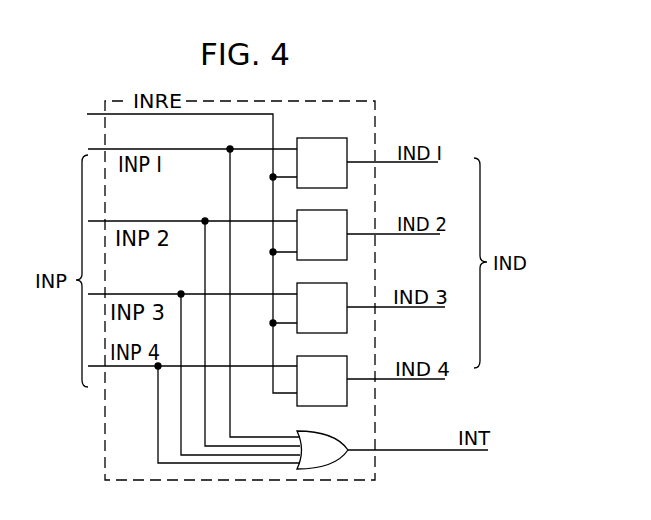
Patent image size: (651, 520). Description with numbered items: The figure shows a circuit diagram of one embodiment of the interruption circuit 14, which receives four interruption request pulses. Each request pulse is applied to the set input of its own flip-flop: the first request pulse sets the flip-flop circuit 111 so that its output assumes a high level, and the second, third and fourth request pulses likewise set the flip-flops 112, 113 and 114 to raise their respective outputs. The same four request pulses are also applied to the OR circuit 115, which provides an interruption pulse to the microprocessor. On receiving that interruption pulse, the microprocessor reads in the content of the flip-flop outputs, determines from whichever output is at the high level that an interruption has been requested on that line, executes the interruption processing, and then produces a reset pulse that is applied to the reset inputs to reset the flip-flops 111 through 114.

The interruption circuit 14 is at (378, 474).
The flip-flop circuit 111 is at (320, 138).
The flip-flop 112 is at (347, 218).
The flip-flop 113 is at (347, 293).
The flip-flop 114 is at (347, 366).
The OR circuit 115 is at (333, 434).